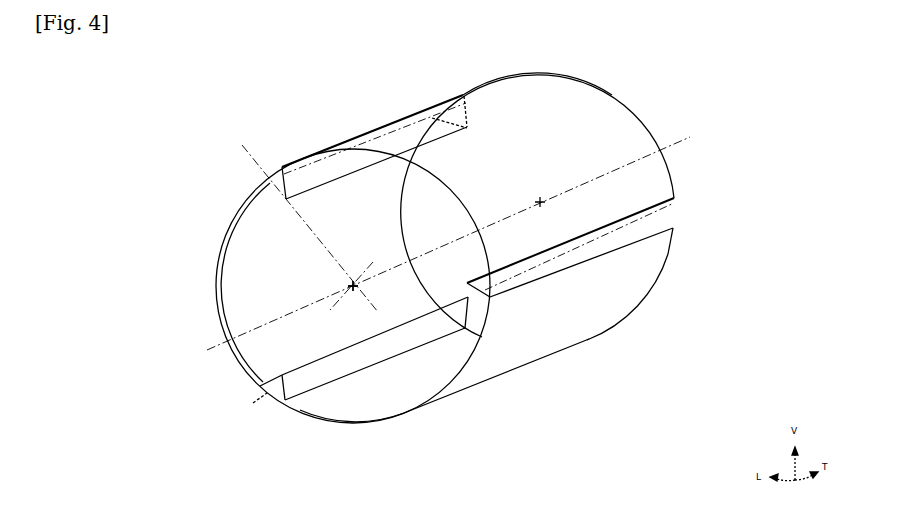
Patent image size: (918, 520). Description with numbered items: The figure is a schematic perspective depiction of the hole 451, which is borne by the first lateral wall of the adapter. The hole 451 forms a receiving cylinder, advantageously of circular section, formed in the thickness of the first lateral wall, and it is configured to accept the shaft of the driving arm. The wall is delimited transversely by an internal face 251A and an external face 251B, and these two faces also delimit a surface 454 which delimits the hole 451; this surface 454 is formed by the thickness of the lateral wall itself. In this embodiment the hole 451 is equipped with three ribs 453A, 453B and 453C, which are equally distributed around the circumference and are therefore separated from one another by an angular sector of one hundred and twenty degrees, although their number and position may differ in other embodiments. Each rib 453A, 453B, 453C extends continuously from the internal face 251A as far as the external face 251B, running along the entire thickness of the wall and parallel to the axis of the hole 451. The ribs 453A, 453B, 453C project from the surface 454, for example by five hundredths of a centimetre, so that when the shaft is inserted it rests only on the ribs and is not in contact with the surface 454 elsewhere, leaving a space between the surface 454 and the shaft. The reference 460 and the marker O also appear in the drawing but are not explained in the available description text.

The hole 451 is at (112, 130).
The internal face 251A is at (612, 95).
The external face 251B is at (220, 325).
The rib 453A is at (505, 284).
The rib 453B is at (293, 355).
The rib 453C is at (282, 195).
The surface 454 is at (382, 400).
The step portion 460 is at (243, 393).
The center axis O is at (220, 253).